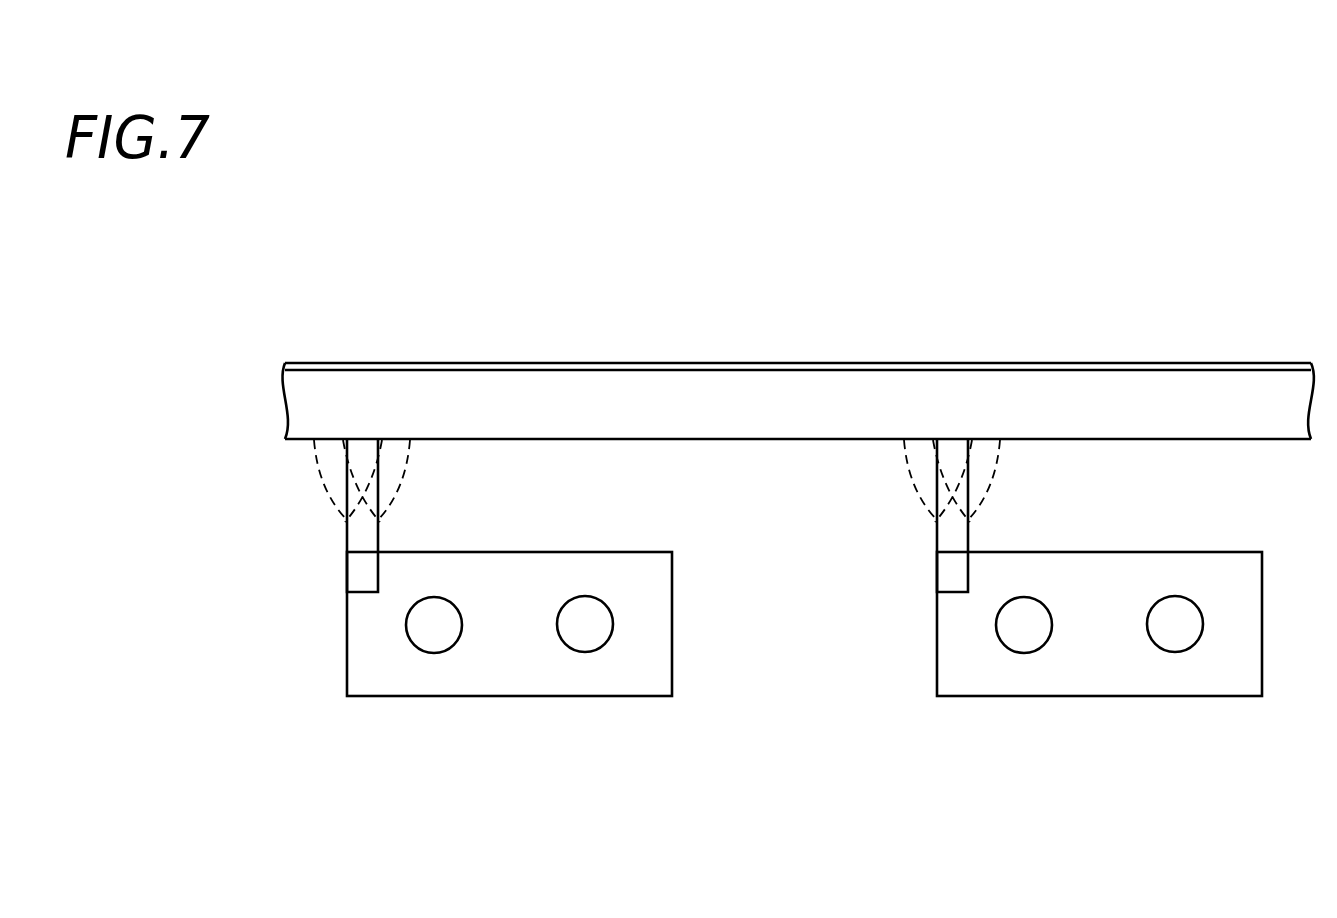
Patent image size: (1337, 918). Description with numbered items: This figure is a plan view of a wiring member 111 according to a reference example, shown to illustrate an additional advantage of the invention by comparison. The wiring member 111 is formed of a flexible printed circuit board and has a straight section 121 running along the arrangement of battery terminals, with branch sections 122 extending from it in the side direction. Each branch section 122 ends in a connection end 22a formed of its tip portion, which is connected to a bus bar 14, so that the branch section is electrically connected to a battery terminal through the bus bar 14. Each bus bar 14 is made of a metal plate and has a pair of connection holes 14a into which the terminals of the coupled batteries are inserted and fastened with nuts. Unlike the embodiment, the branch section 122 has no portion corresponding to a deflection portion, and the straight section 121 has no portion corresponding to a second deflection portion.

The wiring member 111 is at (499, 336).
The straight section 121 is at (740, 360).
The branch section 122 is at (343, 520).
The connection end 22a is at (360, 577).
The bus bar 14 is at (495, 675).
The connection hole 14a is at (407, 637).